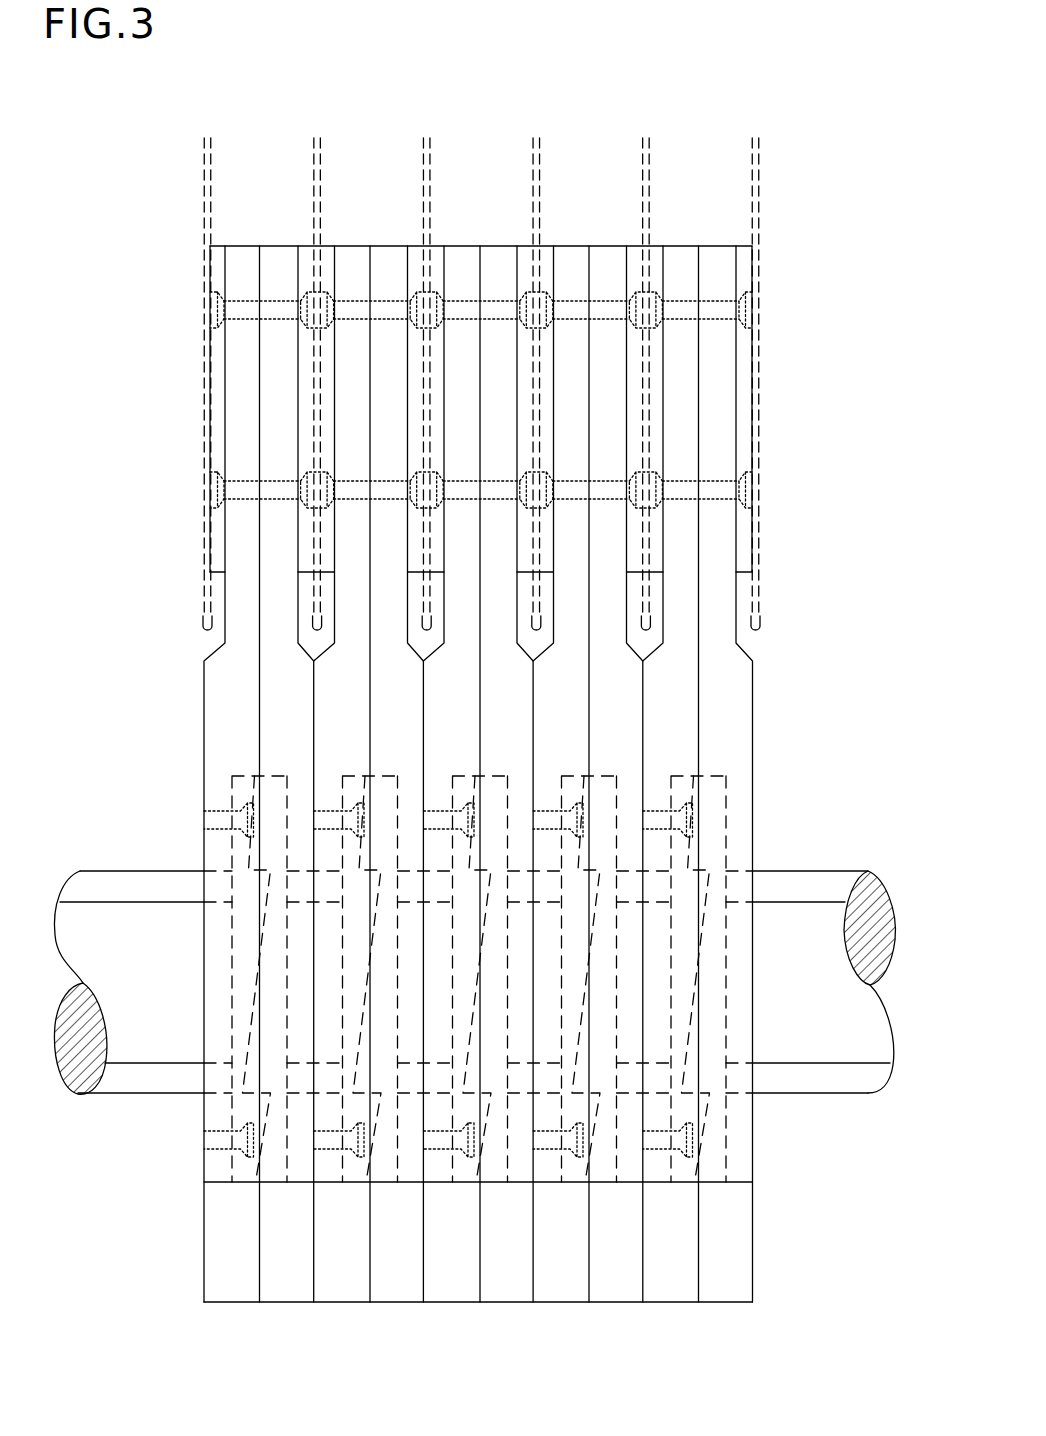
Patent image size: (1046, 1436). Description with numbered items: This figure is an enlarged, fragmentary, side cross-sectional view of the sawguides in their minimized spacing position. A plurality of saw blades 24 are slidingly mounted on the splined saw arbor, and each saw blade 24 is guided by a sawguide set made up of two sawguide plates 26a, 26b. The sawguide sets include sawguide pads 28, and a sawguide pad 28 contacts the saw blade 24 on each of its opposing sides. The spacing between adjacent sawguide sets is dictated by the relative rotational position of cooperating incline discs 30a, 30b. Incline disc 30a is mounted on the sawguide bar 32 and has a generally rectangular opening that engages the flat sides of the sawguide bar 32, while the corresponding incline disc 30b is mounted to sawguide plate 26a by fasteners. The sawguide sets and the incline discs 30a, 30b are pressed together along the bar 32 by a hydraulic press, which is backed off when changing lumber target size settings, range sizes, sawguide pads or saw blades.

The saw blade 24 is at (211, 138).
The sawguide plate 26a is at (572, 266).
The sawguide plate 26b is at (606, 266).
The sawguide pad 28 is at (634, 262).
The incline disc 30a is at (727, 827).
The incline disc 30b is at (697, 777).
The sawguide bar 32 is at (893, 907).